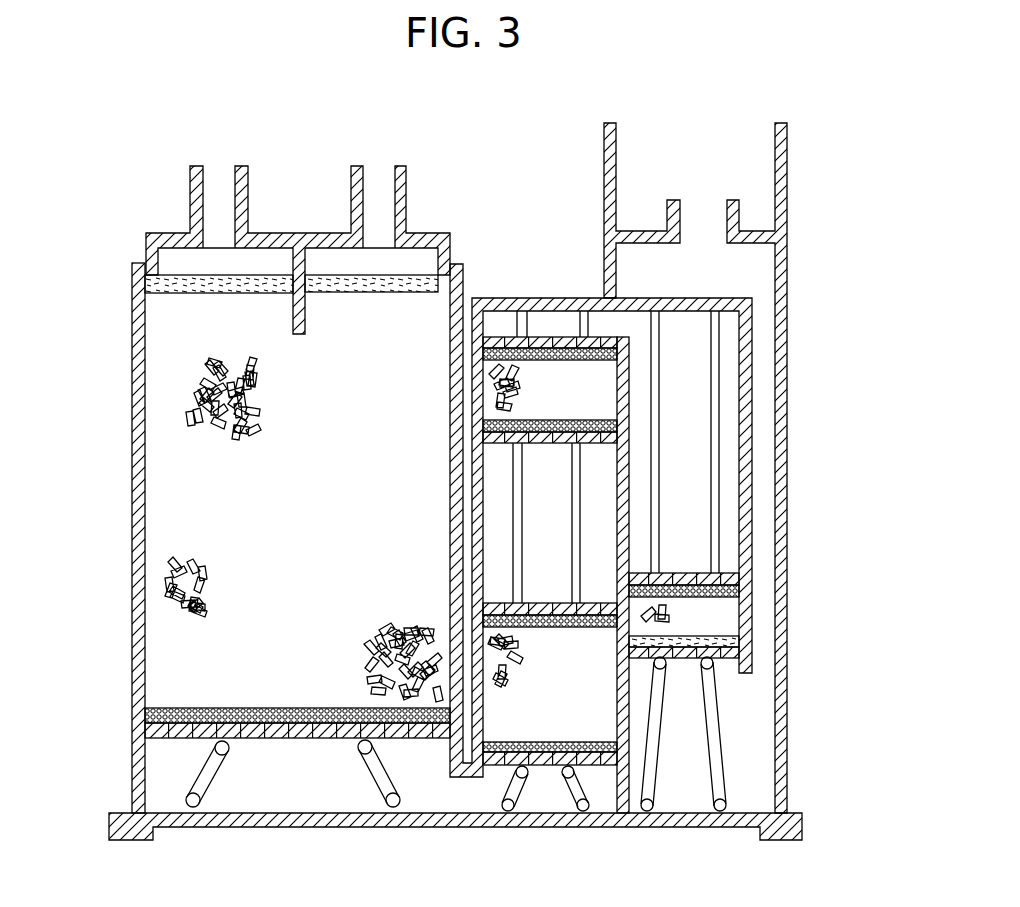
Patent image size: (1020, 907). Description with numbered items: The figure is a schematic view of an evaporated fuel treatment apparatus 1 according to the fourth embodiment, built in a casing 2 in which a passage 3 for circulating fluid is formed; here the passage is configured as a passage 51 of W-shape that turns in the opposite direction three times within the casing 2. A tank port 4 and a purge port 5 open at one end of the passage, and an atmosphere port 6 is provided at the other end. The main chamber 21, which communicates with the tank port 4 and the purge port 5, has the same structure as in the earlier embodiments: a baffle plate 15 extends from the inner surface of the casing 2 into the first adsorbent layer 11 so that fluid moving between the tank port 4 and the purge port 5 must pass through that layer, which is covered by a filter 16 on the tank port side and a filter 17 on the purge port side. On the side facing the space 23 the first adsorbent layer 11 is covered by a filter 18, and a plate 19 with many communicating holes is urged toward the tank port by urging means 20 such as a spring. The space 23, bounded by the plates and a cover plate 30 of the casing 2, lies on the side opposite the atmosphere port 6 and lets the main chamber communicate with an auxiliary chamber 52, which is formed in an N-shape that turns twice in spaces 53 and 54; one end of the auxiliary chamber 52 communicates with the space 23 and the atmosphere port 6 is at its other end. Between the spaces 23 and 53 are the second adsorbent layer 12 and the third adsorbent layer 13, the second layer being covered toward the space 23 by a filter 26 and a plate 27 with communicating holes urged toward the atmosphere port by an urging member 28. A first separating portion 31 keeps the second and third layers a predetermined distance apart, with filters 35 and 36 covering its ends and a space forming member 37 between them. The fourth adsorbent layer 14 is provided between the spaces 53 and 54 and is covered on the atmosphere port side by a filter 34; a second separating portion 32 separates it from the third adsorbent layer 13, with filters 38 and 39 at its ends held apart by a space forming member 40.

The evaporated fuel treatment apparatus 1 is at (128, 260).
The casing 2 is at (133, 562).
The passage 3 is at (168, 507).
The tank port 4 is at (215, 203).
The purge port 5 is at (365, 190).
The atmosphere port 6 is at (708, 210).
The first adsorbent layer 11 is at (203, 340).
The second adsorbent layer 12 is at (597, 710).
The third adsorbent layer 13 is at (527, 342).
The fourth adsorbent layer 14 is at (723, 625).
The baffle plate 15 is at (303, 318).
The filter 16 is at (228, 282).
The filter 17 is at (383, 280).
The filter 18 is at (245, 710).
The plate 19 is at (298, 730).
The urging means 20 is at (192, 813).
The main chamber 21 is at (168, 690).
The space 23 is at (322, 790).
The filter 26 is at (568, 742).
The plate 27 is at (607, 765).
The urging member 28 is at (568, 785).
The cover plate 30 is at (447, 823).
The first separating portion 31 is at (497, 567).
The second separating portion 32 is at (722, 478).
The filter 34 is at (735, 650).
The filter 35 is at (547, 600).
The filter 36 is at (486, 427).
The space forming member 37 is at (512, 505).
The filter 38 is at (505, 358).
The filter 39 is at (733, 588).
The space forming member 40 is at (582, 336).
The passage 51 is at (720, 455).
The auxiliary chamber 52 is at (697, 332).
The space 53 is at (550, 330).
The space 54 is at (733, 717).